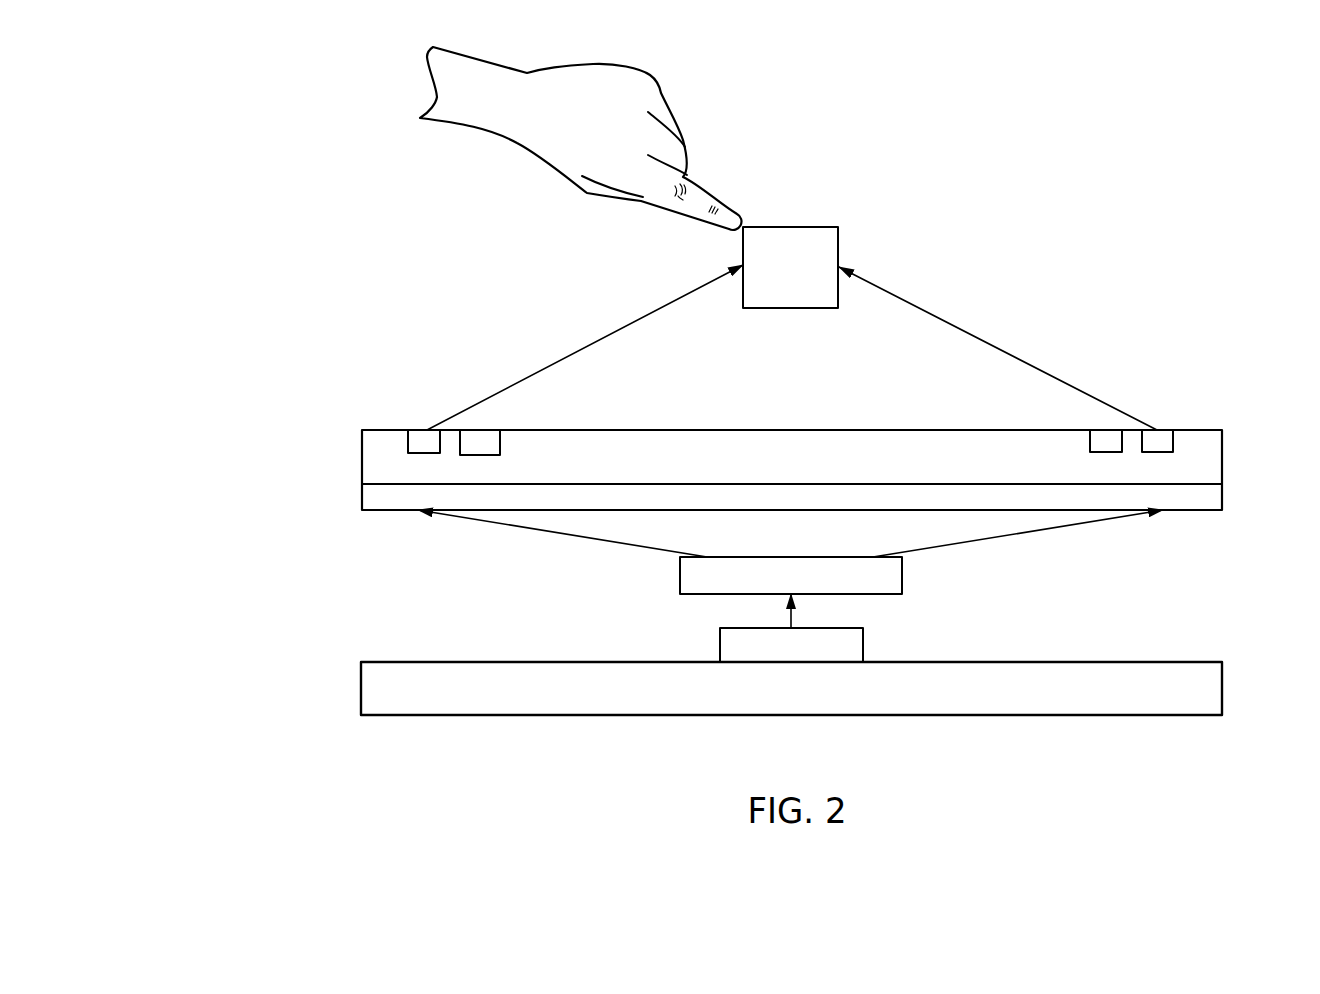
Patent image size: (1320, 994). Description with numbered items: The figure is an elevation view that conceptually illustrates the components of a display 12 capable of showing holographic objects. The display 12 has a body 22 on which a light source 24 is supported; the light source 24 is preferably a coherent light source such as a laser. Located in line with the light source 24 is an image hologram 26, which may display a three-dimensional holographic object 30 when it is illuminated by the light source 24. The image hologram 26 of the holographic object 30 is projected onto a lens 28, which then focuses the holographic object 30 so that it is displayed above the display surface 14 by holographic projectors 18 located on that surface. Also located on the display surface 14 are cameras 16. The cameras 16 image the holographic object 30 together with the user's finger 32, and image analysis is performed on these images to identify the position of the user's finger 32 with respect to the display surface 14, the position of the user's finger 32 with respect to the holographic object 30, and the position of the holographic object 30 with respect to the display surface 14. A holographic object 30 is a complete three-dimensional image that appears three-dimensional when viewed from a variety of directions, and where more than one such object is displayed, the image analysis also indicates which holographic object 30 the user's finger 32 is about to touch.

The display 12 is at (278, 554).
The display surface 14 is at (1223, 455).
The cameras 16 is at (492, 438).
The holographic projectors 18 is at (420, 438).
The body 22 is at (1223, 687).
The light source 24 is at (864, 643).
The image hologram 26 is at (903, 572).
The lens 28 is at (1223, 495).
The three-dimensional holographic object 30 is at (812, 226).
The user's finger 32 is at (727, 204).